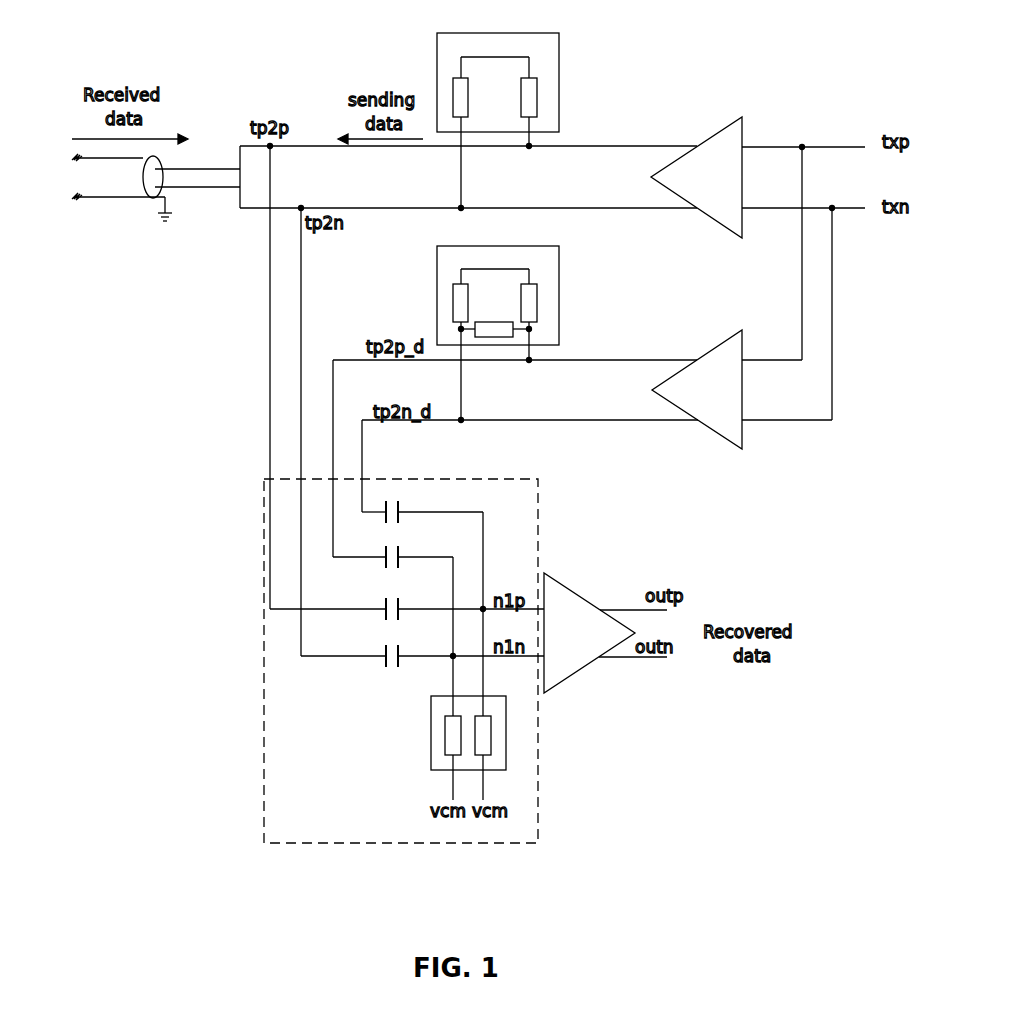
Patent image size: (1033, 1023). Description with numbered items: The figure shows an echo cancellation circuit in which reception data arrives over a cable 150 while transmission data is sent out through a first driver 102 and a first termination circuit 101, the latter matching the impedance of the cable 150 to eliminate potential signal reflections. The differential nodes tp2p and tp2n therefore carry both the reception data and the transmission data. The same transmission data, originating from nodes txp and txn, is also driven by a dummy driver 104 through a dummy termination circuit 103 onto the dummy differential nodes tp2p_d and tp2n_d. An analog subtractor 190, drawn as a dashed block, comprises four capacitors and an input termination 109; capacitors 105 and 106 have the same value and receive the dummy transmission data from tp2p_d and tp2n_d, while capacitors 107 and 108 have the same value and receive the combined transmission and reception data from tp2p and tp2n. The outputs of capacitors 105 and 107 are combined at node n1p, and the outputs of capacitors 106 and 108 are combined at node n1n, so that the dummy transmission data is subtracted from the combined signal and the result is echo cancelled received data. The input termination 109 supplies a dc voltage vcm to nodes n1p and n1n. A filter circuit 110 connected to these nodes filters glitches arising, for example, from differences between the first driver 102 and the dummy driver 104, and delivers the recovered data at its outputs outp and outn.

The first termination circuit 101 is at (563, 43).
The first driver 102 is at (748, 128).
The dummy termination circuit 103 is at (563, 258).
The dummy driver 104 is at (742, 449).
The capacitor 105 is at (407, 503).
The capacitor 106 is at (407, 548).
The capacitor 107 is at (386, 598).
The capacitor 108 is at (380, 665).
The input termination 109 is at (425, 732).
The filter circuit 110 is at (583, 678).
The cable 150 is at (100, 210).
The analog subtractor 190 is at (538, 835).